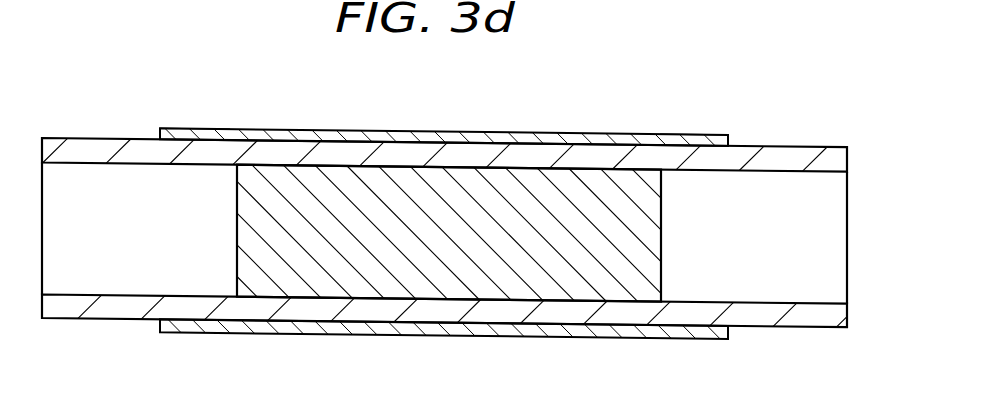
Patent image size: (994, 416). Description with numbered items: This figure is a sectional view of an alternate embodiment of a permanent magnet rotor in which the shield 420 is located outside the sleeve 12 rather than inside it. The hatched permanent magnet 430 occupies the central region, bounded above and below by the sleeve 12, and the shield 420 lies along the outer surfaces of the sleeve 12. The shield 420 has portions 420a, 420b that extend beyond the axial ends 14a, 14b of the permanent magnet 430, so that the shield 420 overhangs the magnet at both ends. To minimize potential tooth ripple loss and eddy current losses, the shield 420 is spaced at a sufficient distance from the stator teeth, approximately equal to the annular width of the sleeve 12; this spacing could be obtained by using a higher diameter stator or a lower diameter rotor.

The sleeve 12 is at (836, 162).
The axial end of permanent magnet 14a is at (106, 308).
The axial end of permanent magnet 14b is at (660, 279).
The shield 420 is at (442, 135).
The portion of shield 420a is at (195, 133).
The portion of shield 420b is at (692, 137).
The permanent magnet 430 is at (648, 233).